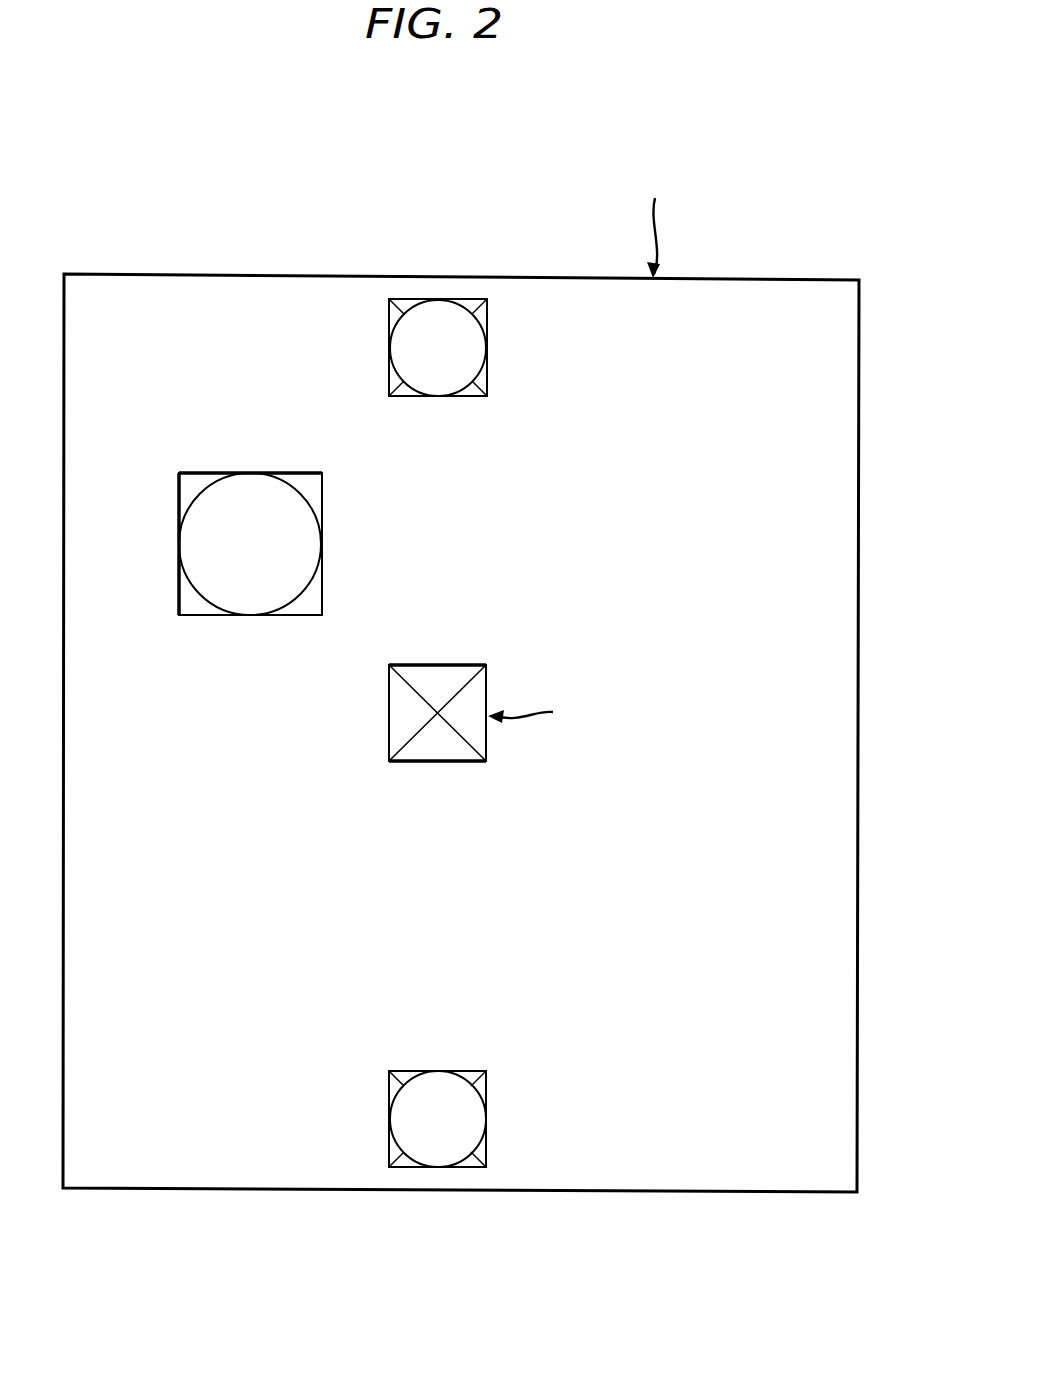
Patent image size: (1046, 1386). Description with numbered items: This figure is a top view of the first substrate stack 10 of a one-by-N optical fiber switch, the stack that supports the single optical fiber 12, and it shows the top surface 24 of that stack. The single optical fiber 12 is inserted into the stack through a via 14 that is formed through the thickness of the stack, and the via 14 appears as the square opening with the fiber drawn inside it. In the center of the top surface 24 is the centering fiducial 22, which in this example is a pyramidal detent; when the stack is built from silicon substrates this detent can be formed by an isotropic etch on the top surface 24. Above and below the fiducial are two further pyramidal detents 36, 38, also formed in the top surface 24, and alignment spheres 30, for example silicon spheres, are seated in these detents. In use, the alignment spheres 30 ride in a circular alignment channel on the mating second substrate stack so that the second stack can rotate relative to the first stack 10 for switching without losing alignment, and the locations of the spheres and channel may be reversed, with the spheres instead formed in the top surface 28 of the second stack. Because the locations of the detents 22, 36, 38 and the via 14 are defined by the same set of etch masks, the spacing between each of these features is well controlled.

The first substrate stack 10 is at (444, 131).
The single optical fiber 12 is at (252, 503).
The via 14 is at (314, 488).
The centering fiducial 22 is at (453, 763).
The top surface 24 is at (834, 1152).
The top surface of second substrate stack 28 is at (437, 1138).
The alignment sphere 30 is at (434, 322).
The pyramidal detent 36 is at (478, 1085).
The pyramidal detent 38 is at (478, 315).